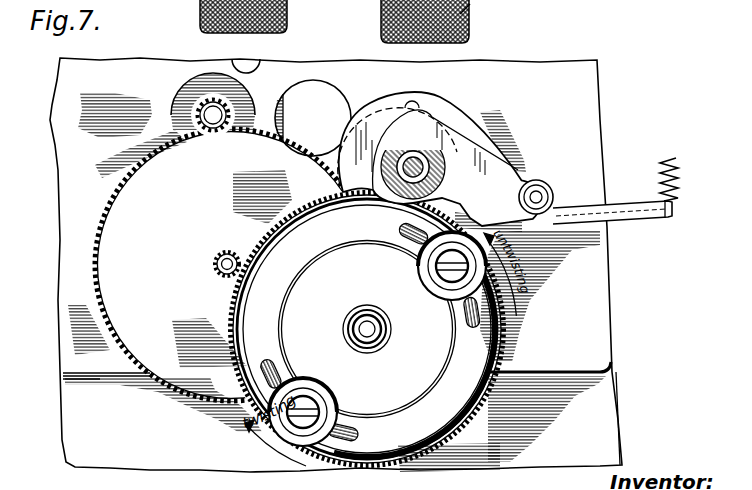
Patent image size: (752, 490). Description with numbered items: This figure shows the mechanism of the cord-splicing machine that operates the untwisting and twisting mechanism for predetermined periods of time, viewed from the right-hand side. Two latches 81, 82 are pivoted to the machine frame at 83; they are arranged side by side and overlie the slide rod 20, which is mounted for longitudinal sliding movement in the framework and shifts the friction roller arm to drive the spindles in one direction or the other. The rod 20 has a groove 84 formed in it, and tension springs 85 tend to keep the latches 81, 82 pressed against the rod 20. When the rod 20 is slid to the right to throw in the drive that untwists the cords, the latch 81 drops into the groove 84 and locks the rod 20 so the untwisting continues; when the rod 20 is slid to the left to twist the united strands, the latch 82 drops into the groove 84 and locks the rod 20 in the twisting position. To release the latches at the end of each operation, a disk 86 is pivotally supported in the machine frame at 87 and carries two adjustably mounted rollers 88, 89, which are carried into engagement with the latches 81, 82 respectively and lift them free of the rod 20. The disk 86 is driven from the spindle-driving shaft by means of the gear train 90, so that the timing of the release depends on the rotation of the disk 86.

The rod 20 is at (412, 174).
The latch 81 is at (353, 155).
The latch 82 is at (385, 100).
The pivot 83 is at (541, 189).
The groove 84 is at (384, 192).
The tension springs 85 is at (676, 161).
The disk 86 is at (464, 394).
The pivot 87 is at (374, 338).
The roller 88 is at (441, 287).
The roller 89 is at (325, 396).
The gear train 90 is at (266, 222).